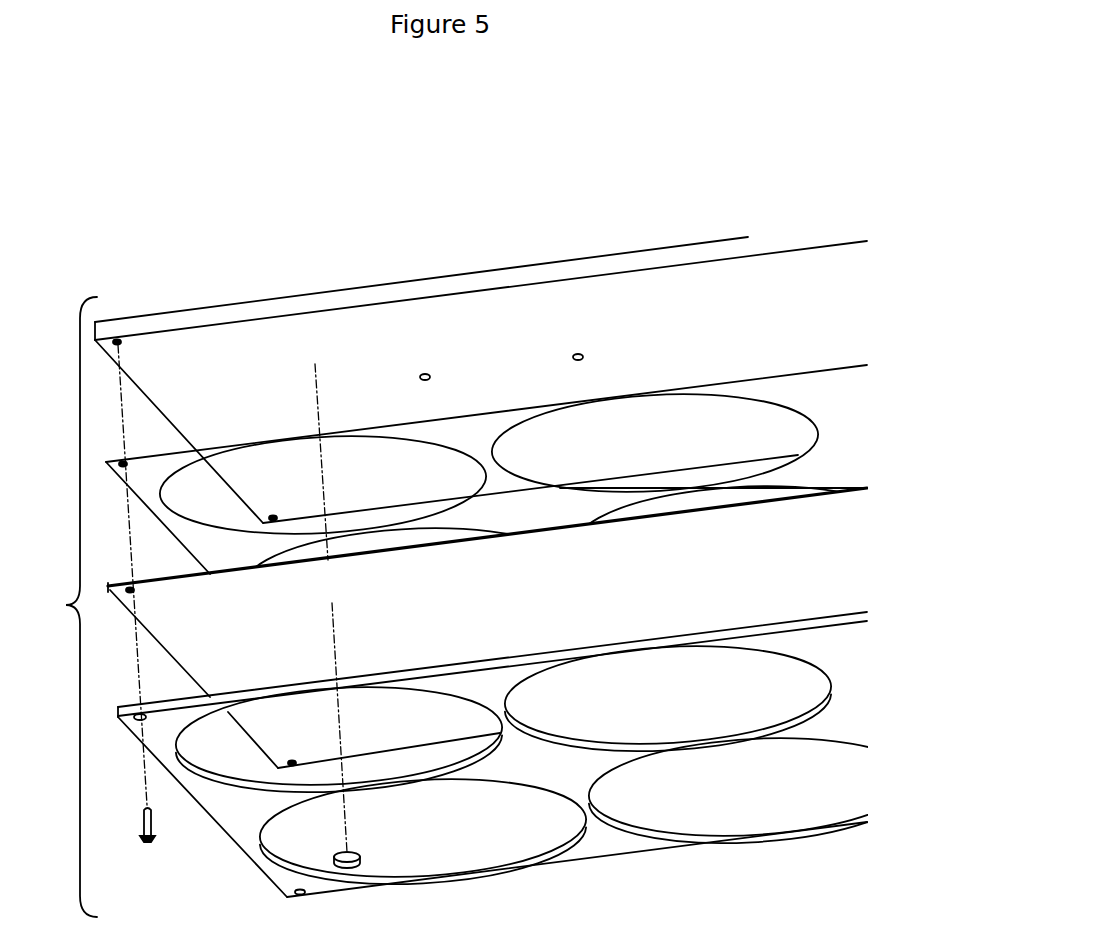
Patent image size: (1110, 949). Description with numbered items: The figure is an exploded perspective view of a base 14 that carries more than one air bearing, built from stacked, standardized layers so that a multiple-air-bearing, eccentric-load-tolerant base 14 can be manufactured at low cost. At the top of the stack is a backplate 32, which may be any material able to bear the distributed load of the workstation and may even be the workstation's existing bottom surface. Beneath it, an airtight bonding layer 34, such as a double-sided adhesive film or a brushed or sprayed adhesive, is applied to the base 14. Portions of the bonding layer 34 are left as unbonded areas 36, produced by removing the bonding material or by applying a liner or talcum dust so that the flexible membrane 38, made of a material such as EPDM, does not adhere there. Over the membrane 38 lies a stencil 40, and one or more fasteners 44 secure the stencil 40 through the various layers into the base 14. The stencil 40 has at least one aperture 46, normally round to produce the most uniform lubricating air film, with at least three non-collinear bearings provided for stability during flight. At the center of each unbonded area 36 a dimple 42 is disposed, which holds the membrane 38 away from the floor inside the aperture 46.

The base 14 is at (63, 607).
The backplate 32 is at (320, 330).
The bonding layer 34 is at (152, 470).
The unbonded area 36 is at (190, 500).
The membrane 38 is at (167, 612).
The stencil 40 is at (163, 733).
The dimple 42 is at (367, 867).
The fasteners 44 is at (155, 842).
The aperture 46 is at (500, 822).